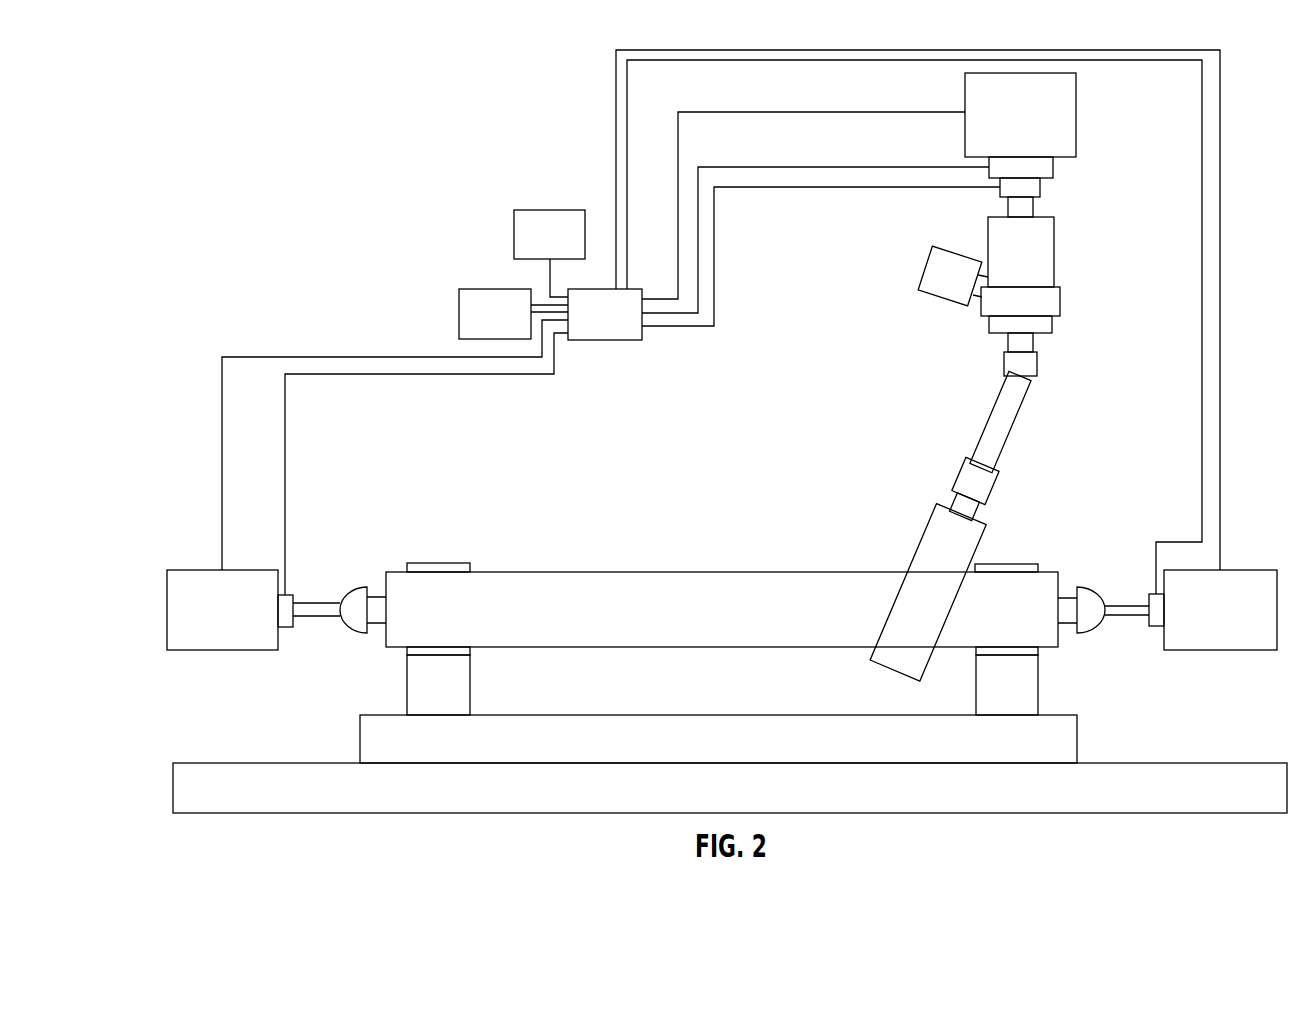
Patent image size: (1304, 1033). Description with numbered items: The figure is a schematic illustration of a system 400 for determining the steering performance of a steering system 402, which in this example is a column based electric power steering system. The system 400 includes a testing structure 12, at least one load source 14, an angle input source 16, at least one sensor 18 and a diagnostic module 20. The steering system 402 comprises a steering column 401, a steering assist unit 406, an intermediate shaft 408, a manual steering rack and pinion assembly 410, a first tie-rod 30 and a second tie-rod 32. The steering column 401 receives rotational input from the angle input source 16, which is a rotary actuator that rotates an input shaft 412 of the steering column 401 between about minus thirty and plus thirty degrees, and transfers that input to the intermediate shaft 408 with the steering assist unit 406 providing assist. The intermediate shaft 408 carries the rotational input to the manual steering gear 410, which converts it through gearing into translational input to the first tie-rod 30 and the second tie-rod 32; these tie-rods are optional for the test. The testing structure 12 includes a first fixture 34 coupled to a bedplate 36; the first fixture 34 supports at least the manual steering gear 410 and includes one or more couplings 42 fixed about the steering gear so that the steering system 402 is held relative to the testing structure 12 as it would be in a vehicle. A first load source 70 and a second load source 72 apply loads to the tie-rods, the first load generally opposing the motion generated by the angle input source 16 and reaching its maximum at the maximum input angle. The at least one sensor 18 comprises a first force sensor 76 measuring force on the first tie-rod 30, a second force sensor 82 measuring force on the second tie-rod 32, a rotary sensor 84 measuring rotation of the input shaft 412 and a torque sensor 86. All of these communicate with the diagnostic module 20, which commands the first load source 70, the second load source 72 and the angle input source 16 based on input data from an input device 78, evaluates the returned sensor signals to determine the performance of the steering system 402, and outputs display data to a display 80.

The system 400 is at (437, 83).
The testing structure 12 is at (1215, 737).
The load source 14 is at (203, 527).
The angle input source 16 is at (1076, 113).
The sensor 18 is at (1103, 160).
The diagnostic module 20 is at (622, 340).
The first tie-rod 30 is at (357, 587).
The second tie-rod 32 is at (1083, 587).
The first fixture 34 is at (1085, 737).
The bedplate 36 is at (1140, 813).
The couplings 42 is at (402, 663).
The first load source 70 is at (220, 650).
The second load source 72 is at (1222, 650).
The first force sensor 76 is at (285, 627).
The input device 78 is at (537, 210).
The display 80 is at (483, 289).
The second force sensor 82 is at (1152, 626).
The rotary sensor 84 is at (1040, 187).
The torque sensor 86 is at (1053, 165).
The steering column 401 is at (1057, 243).
The steering system 402 is at (905, 327).
The steering assist unit 406 is at (925, 263).
The intermediate shaft 408 is at (1017, 425).
The manual steering rack and pinion assembly 410 is at (762, 572).
The input shaft 412 is at (1008, 203).